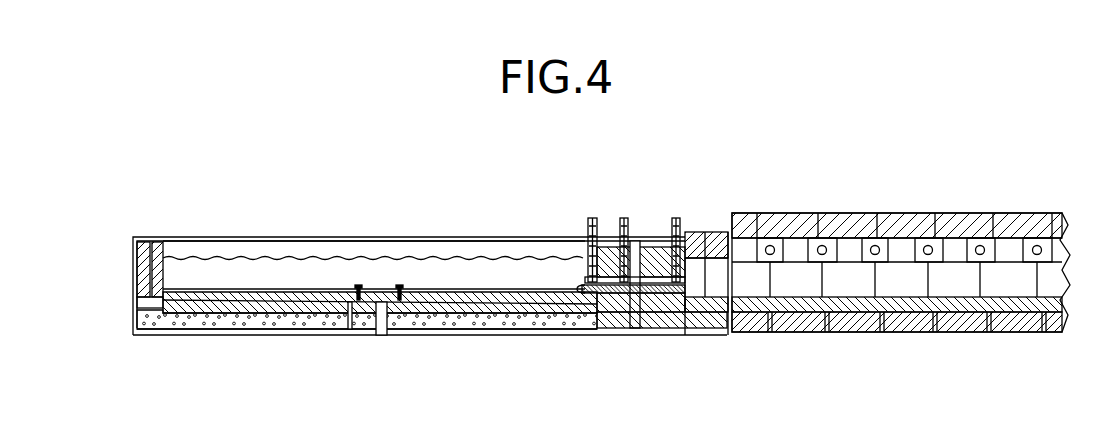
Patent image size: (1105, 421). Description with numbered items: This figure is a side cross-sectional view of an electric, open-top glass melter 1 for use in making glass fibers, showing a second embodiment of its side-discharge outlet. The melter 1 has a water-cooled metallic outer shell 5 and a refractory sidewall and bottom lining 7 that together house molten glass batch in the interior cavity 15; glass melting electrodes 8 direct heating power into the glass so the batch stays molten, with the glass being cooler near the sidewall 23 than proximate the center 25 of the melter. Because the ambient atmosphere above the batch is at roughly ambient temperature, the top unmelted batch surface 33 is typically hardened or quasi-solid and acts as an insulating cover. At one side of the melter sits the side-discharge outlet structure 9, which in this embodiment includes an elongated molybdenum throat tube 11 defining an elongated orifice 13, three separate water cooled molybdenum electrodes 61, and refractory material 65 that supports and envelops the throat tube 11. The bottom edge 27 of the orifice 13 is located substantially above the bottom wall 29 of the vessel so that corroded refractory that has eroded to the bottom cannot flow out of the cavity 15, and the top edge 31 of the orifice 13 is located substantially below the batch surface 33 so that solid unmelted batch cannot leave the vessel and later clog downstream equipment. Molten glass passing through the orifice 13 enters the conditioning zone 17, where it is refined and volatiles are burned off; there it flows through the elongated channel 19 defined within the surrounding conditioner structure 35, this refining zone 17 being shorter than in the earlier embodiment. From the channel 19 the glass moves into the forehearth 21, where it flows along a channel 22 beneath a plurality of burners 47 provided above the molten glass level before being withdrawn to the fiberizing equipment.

The melter 1 is at (459, 175).
The outer shell 5 is at (142, 237).
The refractory sidewall and bottom lining 7 is at (163, 255).
The glass melting electrodes 8 is at (357, 286).
The side-discharge outlet structure 9 is at (637, 198).
The throat tube 11 is at (577, 287).
The orifice 13 is at (608, 296).
The interior cavity 15 is at (478, 284).
The conditioning zone 17 is at (711, 174).
The channel 19 is at (692, 287).
The forehearth 21 is at (732, 186).
The channel 22 is at (907, 288).
The sidewall 23 is at (165, 276).
The center 25 is at (380, 280).
The bottom edge 27 is at (582, 286).
The bottom wall 29 is at (515, 298).
The top edge 31 is at (584, 279).
The top unmelted batch surface 33 is at (266, 257).
The conditioner structure 35 is at (680, 305).
The burners 47 is at (820, 247).
The water cooled molybdenum electrodes 61 is at (622, 222).
The refractory material 65 is at (655, 250).